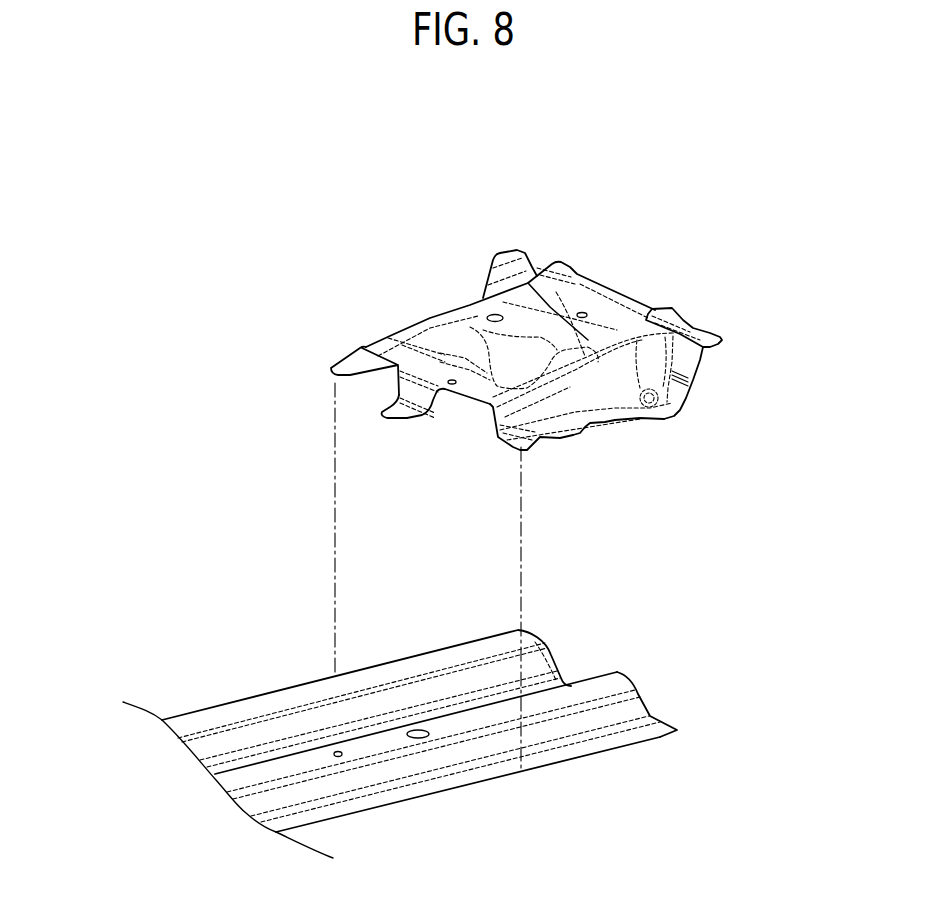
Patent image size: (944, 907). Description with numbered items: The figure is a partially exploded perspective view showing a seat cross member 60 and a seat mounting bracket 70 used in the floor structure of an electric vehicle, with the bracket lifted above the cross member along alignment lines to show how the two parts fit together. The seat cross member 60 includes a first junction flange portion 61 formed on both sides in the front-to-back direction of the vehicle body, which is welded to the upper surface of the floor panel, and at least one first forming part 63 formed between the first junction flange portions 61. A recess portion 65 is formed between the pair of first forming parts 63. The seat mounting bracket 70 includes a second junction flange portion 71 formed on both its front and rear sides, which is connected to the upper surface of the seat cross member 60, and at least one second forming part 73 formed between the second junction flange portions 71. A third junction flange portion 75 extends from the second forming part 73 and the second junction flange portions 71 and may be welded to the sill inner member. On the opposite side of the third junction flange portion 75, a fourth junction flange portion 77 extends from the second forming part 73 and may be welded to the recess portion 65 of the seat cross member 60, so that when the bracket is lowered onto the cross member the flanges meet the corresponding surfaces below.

The seat cross member 60 is at (404, 717).
The first junction flange portion 61 is at (463, 777).
The first forming part 63 is at (418, 668).
The recess portion 65 is at (572, 672).
The seat mounting bracket 70 is at (548, 364).
The second junction flange portion 71 is at (340, 367).
The second forming part 73 is at (475, 310).
The third junction flange portion 75 is at (680, 362).
The fourth junction flange portion 77 is at (410, 421).